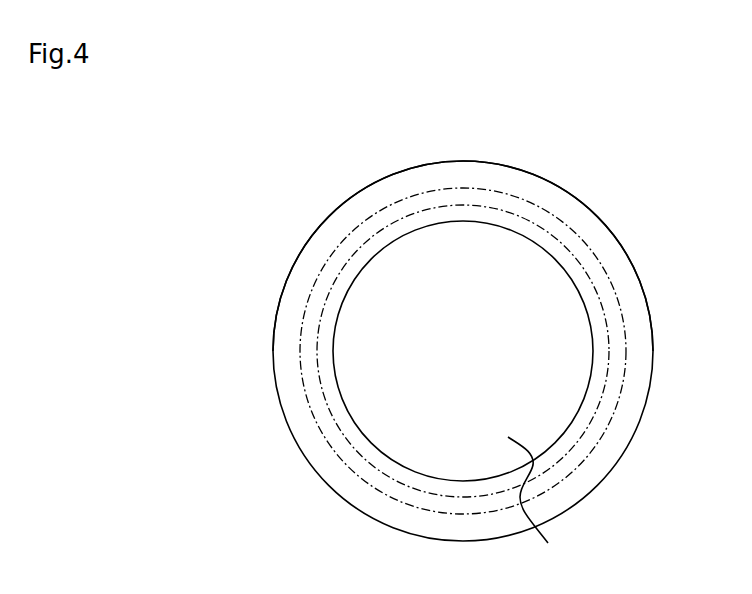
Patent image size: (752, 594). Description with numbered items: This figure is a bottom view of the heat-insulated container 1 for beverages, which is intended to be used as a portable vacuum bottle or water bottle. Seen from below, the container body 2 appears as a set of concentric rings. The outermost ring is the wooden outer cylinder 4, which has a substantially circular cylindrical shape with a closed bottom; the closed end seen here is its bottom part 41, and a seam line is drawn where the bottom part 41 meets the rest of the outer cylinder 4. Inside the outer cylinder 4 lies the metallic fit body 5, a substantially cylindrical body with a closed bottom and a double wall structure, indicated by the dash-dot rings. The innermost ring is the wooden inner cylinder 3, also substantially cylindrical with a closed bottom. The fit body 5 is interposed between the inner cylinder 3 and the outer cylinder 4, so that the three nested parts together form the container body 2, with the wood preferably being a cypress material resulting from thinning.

The heat-insulated container for beverages 1 is at (365, 170).
The container body 2 is at (277, 303).
The wooden inner cylinder 3 is at (340, 447).
The wooden outer cylinder 4 is at (652, 308).
The metallic fit body 5 is at (610, 423).
The bottom part 41 is at (548, 543).